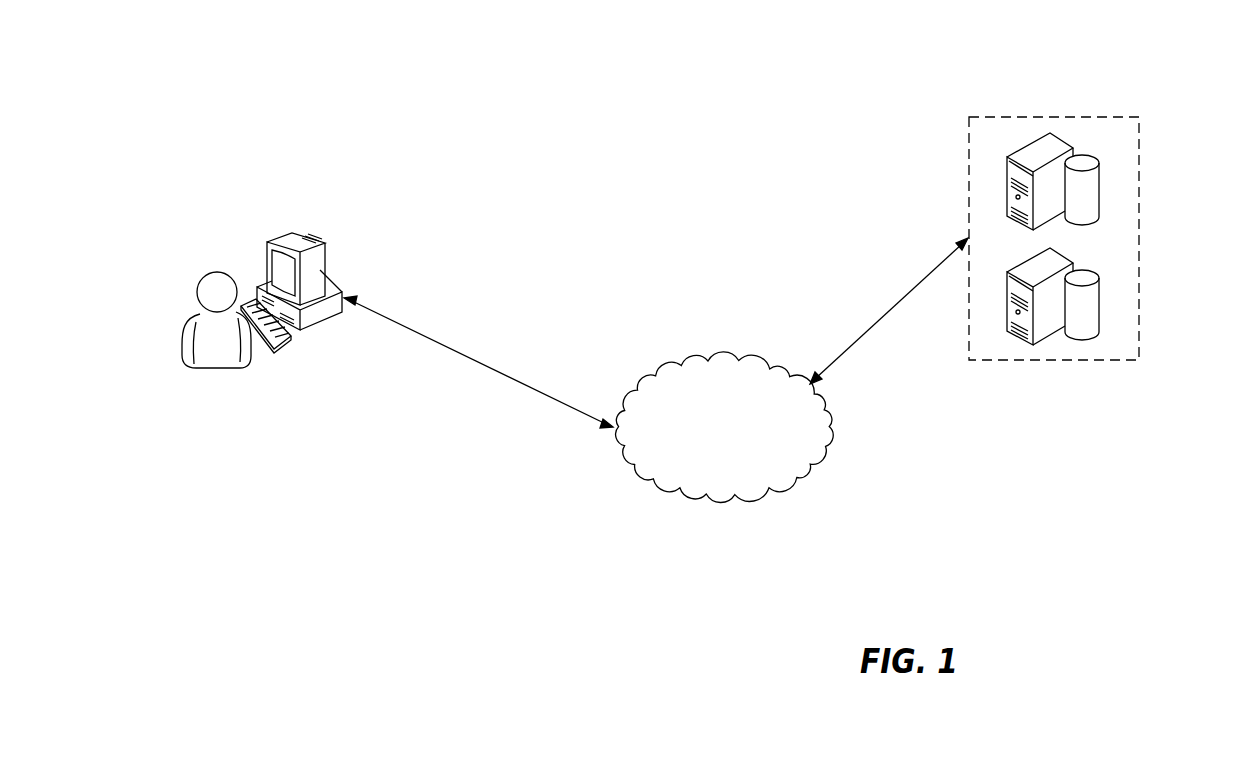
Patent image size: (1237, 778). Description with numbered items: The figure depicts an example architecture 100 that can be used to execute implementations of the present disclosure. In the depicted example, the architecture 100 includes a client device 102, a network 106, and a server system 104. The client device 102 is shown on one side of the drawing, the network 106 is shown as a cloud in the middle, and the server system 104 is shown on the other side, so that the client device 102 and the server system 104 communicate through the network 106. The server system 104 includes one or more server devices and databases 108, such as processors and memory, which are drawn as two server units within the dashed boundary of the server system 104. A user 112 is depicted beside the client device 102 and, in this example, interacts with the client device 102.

The architecture 100 is at (575, 116).
The client device 102 is at (268, 250).
The server system 104 is at (1139, 238).
The network 106 is at (727, 354).
The server devices and databases 108 is at (1006, 181).
The user 112 is at (215, 369).